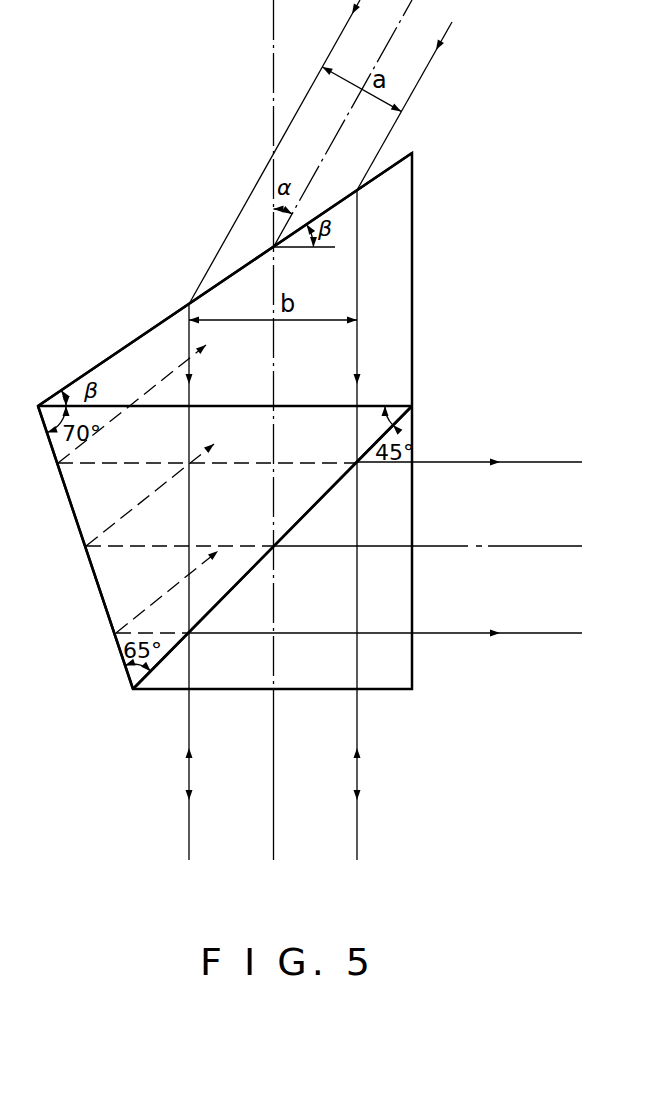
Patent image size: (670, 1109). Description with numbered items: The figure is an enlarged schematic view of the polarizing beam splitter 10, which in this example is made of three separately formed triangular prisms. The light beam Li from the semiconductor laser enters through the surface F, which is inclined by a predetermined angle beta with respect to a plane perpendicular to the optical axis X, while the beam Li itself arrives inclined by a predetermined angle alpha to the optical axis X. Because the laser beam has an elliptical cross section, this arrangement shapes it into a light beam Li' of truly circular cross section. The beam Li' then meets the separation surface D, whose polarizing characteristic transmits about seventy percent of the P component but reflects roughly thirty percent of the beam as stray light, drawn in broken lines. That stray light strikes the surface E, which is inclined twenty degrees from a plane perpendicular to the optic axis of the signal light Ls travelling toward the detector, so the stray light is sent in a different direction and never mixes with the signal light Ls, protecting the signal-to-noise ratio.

The polarizing beam splitter 10 is at (393, 252).
The surface F is at (395, 157).
The separation surface D is at (377, 425).
The surface E is at (100, 597).
The optical axis X is at (273, 52).
The light beam Li is at (348, 152).
The light beam Li' is at (329, 525).
The signal light Ls is at (548, 487).